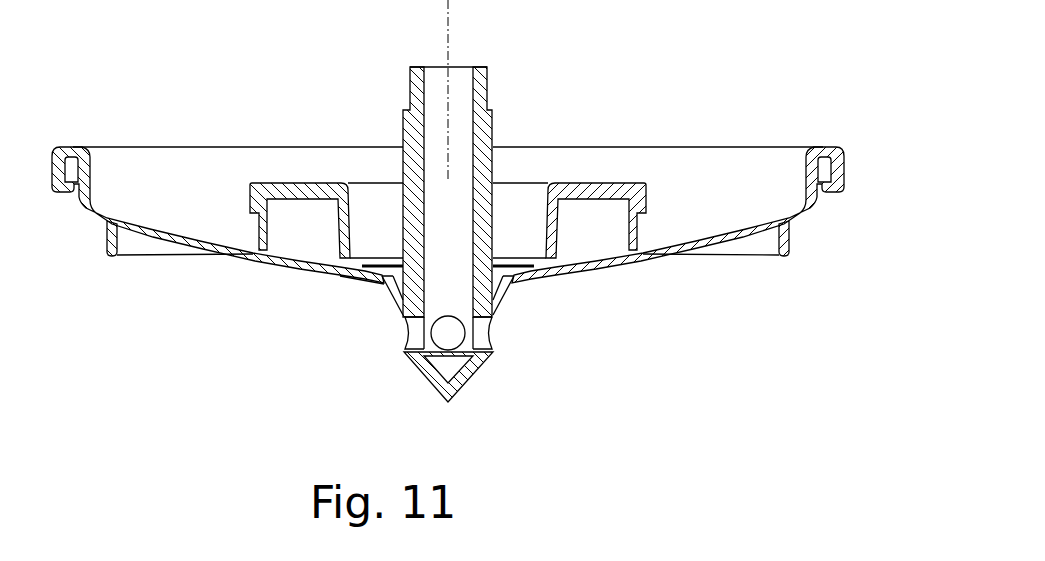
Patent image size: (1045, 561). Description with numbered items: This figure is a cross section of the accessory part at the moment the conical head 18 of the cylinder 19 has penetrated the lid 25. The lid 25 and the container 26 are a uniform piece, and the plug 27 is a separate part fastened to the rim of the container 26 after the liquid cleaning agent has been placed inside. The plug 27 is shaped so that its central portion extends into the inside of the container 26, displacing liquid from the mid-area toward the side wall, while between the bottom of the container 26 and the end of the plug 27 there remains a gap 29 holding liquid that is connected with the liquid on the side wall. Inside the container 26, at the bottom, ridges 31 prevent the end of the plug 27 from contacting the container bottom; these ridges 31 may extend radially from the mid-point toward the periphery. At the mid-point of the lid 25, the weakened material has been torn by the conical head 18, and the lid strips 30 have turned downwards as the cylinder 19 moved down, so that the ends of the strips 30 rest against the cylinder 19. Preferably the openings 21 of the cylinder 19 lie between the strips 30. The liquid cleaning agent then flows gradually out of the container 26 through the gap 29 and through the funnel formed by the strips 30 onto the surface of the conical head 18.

The conical head 18 is at (458, 382).
The cylinder 19 is at (450, 124).
The openings 21 is at (448, 336).
The lid 25 is at (808, 218).
The container 26 is at (645, 216).
The plug 27 is at (515, 202).
The gap 29 is at (365, 277).
The lid strips 30 is at (508, 291).
The ridges 31 is at (505, 267).